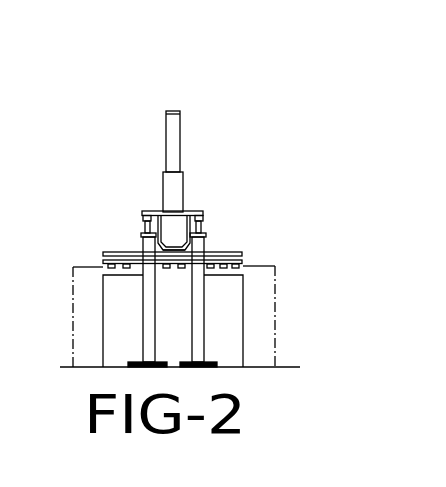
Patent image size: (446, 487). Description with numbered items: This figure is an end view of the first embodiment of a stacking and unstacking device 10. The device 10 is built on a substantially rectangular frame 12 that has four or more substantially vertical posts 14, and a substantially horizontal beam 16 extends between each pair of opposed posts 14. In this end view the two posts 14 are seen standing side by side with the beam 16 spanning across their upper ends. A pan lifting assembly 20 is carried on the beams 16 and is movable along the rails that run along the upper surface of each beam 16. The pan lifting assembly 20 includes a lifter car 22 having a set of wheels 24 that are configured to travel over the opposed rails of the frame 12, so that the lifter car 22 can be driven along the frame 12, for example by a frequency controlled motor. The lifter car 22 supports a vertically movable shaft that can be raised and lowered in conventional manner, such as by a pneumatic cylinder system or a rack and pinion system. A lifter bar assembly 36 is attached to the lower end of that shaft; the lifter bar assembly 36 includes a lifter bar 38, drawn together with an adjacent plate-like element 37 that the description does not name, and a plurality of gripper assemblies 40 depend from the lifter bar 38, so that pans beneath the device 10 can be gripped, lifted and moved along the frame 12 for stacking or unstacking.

The stacking and unstacking device 10 is at (258, 138).
The frame 12 is at (76, 178).
The posts 14 is at (148, 337).
The beam 16 is at (143, 229).
The pan lifting assembly 20 is at (133, 108).
The lifter car 22 is at (175, 211).
The wheels 24 is at (145, 216).
The lifter bar assembly 36 is at (258, 239).
The support plate 37 is at (105, 252).
The lifter bar 38 is at (272, 284).
The gripper assemblies 40 is at (103, 272).